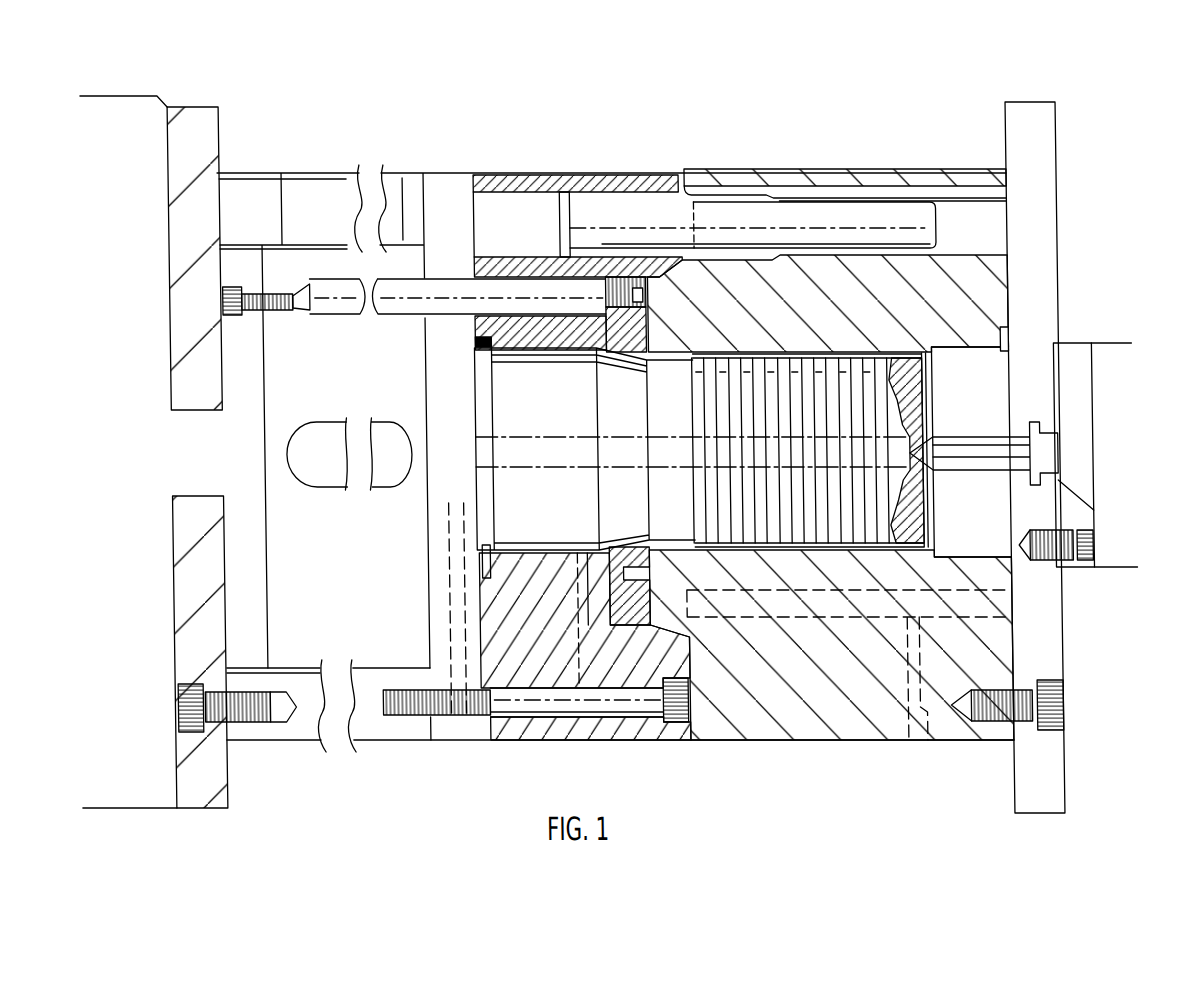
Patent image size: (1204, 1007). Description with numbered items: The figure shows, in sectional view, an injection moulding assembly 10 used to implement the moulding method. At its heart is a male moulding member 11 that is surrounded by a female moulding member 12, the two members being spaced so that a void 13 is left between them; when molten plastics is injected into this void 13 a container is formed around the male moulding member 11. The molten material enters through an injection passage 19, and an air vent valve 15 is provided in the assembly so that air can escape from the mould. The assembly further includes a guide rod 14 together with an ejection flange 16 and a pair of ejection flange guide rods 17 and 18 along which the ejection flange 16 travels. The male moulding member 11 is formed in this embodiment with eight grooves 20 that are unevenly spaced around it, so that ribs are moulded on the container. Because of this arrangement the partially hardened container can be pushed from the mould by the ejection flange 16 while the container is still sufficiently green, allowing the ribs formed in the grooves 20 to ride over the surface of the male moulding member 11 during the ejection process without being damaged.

The injection moulding assembly 10 is at (1065, 99).
The male moulding member 11 is at (908, 350).
The female moulding member 12 is at (778, 310).
The void 13 is at (878, 560).
The guide rod 14 is at (905, 222).
The air vent valve 15 is at (1042, 453).
The ejection flange 16 is at (617, 613).
The ejection flange guide rod 17 is at (516, 290).
The ejection flange guide rod 18 is at (508, 700).
The injection passage 19 is at (1054, 430).
The grooves 20 is at (879, 520).